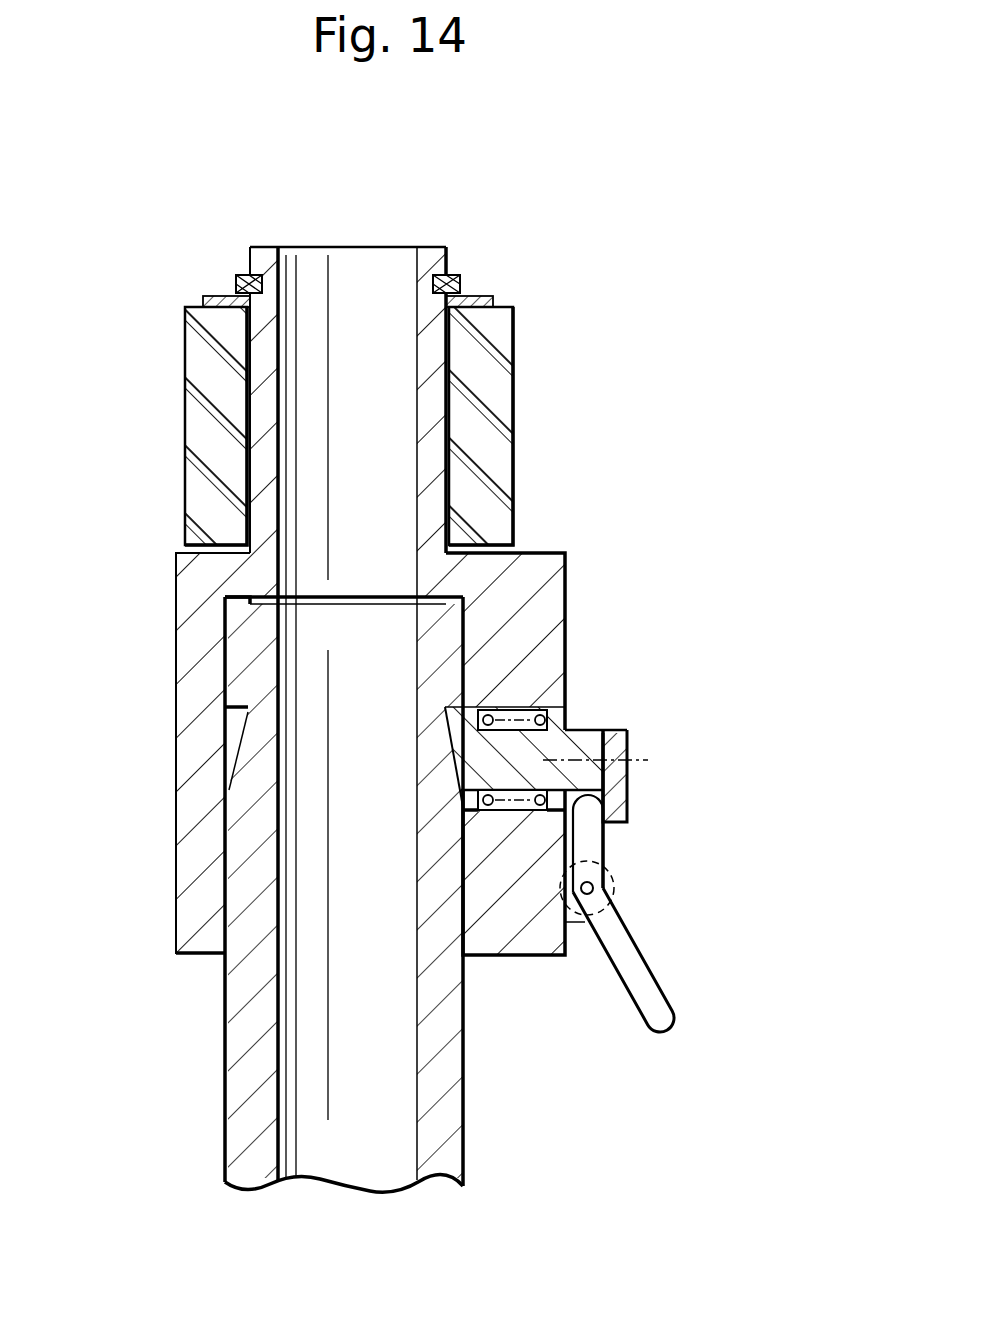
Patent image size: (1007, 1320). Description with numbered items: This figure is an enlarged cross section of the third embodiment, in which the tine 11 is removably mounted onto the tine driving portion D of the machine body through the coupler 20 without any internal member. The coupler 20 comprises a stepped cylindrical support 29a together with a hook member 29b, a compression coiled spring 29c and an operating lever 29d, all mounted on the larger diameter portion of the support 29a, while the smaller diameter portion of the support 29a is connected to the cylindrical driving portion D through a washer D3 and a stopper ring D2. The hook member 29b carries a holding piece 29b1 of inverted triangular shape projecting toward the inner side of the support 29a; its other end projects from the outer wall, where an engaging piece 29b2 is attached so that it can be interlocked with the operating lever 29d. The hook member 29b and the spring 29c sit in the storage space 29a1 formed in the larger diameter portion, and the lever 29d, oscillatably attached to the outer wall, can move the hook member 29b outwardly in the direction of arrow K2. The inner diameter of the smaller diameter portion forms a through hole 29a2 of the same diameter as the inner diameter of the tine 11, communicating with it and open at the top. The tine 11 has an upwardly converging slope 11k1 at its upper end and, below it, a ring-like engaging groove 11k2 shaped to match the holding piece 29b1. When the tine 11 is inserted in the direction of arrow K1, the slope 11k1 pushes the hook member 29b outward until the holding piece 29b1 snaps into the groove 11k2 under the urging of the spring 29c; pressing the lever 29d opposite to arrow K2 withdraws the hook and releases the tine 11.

The tine 11 is at (480, 1125).
The upwardly converging slope 11k1 is at (227, 613).
The engaging groove 11k2 is at (233, 716).
The coupler 20 is at (578, 612).
The stepped cylindrical support 29a is at (192, 877).
The storage space 29a1 is at (505, 812).
The through hole 29a2 is at (353, 278).
The hook member 29b is at (580, 748).
The holding piece 29b1 is at (455, 722).
The engaging piece 29b2 is at (625, 803).
The compression coiled spring 29c is at (511, 712).
The operating lever 29d is at (643, 968).
The tine driving portion D is at (482, 402).
The stopper ring D2 is at (448, 276).
The washer D3 is at (482, 295).
The direction of arrow K1 is at (341, 1105).
The direction of arrow K2 is at (657, 787).